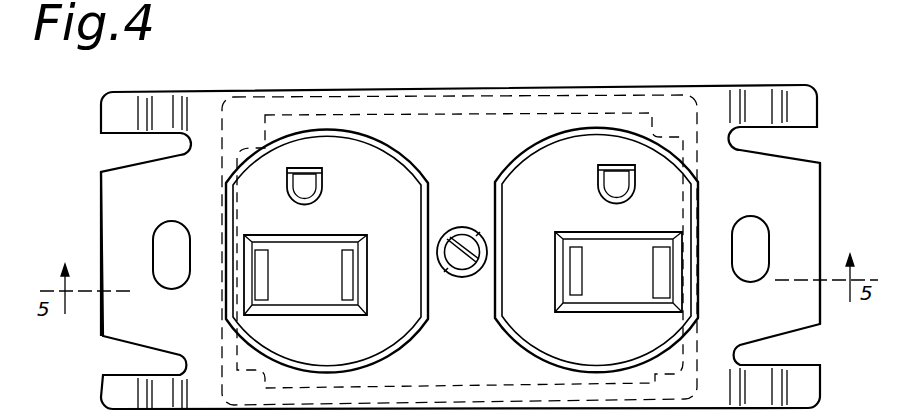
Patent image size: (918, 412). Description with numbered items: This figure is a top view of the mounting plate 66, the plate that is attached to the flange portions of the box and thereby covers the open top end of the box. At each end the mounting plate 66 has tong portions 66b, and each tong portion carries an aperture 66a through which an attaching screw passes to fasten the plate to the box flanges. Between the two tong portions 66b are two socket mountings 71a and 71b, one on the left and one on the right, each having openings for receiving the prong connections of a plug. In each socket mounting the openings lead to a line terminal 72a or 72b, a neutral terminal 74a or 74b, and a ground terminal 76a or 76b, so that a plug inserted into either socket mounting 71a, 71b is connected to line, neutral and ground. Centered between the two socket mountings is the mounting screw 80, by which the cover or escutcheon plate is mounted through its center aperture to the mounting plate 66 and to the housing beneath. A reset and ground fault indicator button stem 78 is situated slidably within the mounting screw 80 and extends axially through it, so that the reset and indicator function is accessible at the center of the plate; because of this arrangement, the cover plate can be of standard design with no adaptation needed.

The mounting plate 66 is at (534, 90).
The apertures 66a is at (166, 218).
The tong portions 66b is at (116, 244).
The socket mounting 71a is at (321, 143).
The socket mounting 71b is at (600, 143).
The line terminal 72a is at (262, 250).
The line terminal 72b is at (576, 250).
The neutral terminal 74a is at (350, 250).
The neutral terminal 74b is at (662, 290).
The ground terminal 76a is at (306, 186).
The ground terminal 76b is at (612, 184).
The reset and ground fault indicator button stem 78 is at (463, 262).
The mounting screw 80 is at (460, 228).